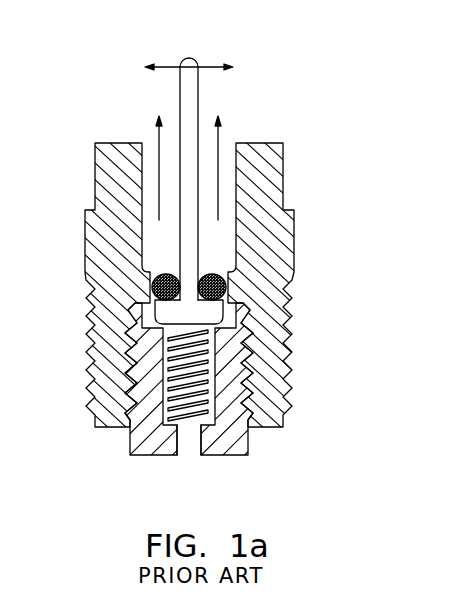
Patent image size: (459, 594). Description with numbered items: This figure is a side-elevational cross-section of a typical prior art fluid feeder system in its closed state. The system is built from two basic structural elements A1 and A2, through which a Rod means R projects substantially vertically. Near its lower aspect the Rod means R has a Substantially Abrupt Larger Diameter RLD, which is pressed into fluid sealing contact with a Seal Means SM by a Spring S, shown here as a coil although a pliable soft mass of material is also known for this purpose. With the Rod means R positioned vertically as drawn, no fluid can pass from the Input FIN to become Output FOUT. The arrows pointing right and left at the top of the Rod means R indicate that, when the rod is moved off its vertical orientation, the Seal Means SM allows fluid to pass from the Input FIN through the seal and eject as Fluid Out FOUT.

The Rod means R is at (205, 56).
The Fluid Out FOUT is at (189, 156).
The basic structural element A1 is at (272, 192).
The Seal Means SM is at (226, 283).
The Substantially Abrupt Larger Diameter RLD is at (218, 317).
The Spring S is at (148, 431).
The basic structural element A2 is at (234, 441).
The Input FIN is at (189, 462).